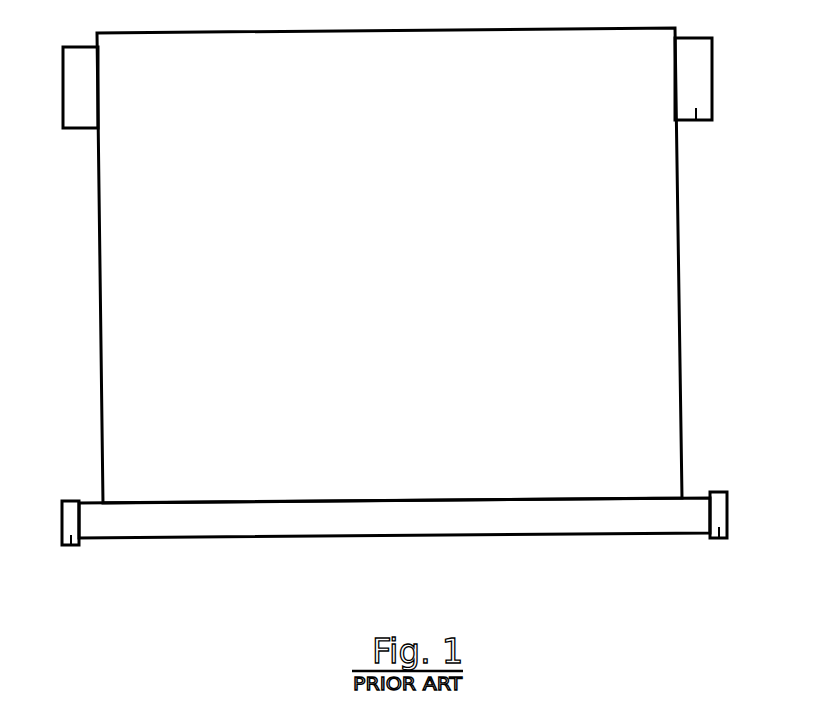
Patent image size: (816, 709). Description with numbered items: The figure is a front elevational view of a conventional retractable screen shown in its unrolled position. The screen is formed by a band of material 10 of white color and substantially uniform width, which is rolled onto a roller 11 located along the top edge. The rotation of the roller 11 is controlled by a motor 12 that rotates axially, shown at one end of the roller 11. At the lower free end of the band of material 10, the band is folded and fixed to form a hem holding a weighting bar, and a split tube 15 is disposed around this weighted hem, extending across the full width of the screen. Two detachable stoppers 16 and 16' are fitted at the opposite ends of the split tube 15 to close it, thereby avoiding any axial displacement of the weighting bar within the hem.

The band of material 10 is at (412, 417).
The roller 11 is at (696, 120).
The motor 12 is at (712, 85).
The split tube 15 is at (260, 527).
The detachable stopper 16 is at (749, 550).
The detachable stopper 16' is at (50, 557).